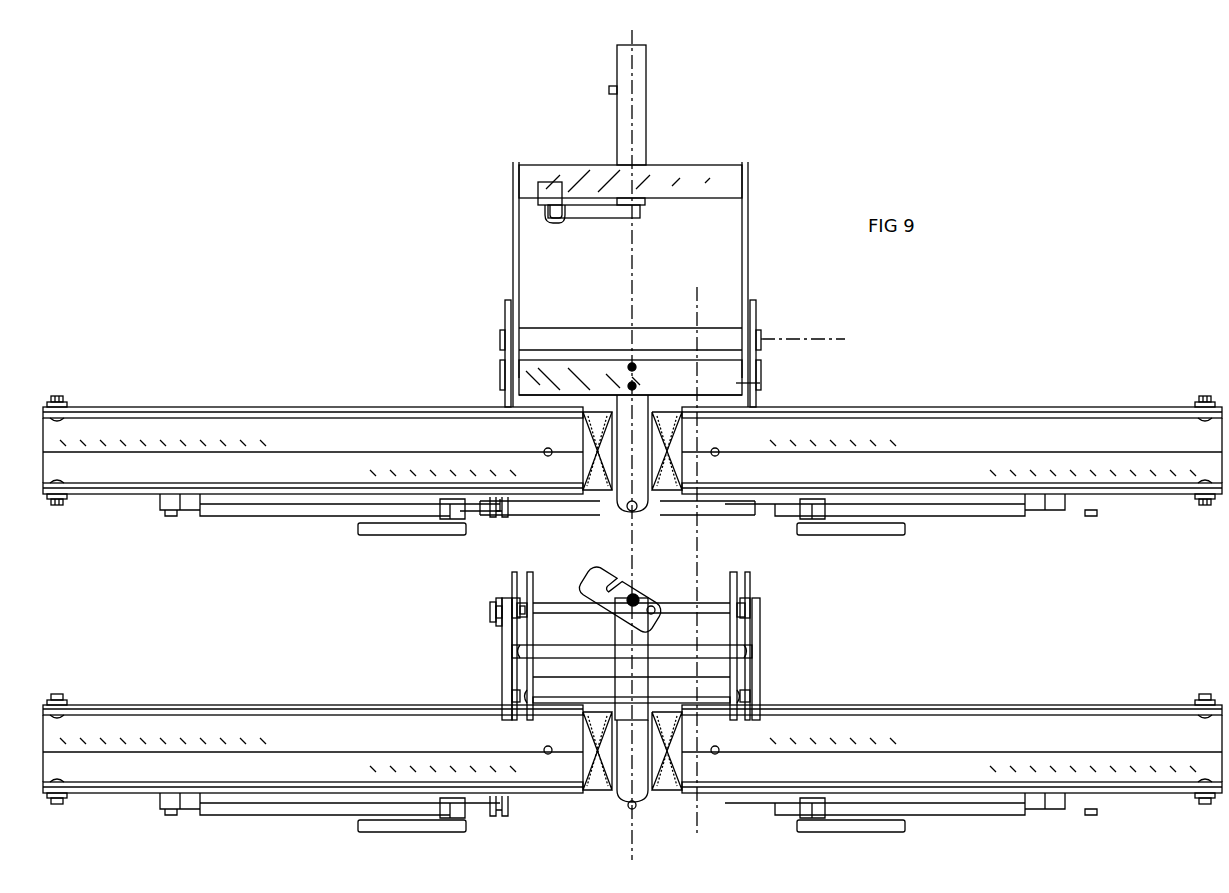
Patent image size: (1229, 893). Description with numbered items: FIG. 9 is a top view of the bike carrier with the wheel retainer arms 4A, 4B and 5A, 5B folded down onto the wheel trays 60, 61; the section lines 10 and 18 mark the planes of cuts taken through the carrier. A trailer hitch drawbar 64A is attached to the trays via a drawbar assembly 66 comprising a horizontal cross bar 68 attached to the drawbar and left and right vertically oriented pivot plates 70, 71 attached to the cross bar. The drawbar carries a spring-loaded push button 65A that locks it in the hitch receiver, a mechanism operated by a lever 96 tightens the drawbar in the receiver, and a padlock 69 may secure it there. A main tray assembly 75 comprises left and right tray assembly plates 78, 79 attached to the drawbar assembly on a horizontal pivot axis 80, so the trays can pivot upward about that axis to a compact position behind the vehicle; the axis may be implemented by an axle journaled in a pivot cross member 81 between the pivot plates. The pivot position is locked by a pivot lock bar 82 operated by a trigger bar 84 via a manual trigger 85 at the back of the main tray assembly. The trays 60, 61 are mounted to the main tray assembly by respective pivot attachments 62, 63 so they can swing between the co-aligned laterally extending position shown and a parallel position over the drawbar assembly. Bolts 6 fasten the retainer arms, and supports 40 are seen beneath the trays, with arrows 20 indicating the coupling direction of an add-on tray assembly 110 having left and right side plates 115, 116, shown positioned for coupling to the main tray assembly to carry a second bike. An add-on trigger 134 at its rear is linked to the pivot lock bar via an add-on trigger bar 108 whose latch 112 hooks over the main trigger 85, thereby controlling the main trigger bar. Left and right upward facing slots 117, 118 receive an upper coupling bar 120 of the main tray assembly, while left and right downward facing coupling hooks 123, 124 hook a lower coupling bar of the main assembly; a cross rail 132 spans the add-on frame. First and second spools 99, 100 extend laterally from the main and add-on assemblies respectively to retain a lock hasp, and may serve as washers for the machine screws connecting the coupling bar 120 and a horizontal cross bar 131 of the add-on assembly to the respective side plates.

The section line 10 is at (632, 30).
The section line 18 is at (697, 287).
The spring-loaded push button 65A is at (607, 90).
The trailer hitch drawbar 64A is at (646, 90).
The padlock 69 is at (550, 182).
The horizontal cross bar 68 is at (685, 175).
The drawbar assembly 66 is at (455, 228).
The left pivot plate 70 is at (519, 259).
The right pivot plate 71 is at (742, 259).
The lever 96 is at (592, 216).
The left tray assembly plate 78 is at (505, 315).
The right tray assembly plate 79 is at (757, 317).
The horizontal pivot axis 80 is at (840, 339).
The pivot cross member 81 is at (578, 329).
The main tray assembly 75 is at (455, 378).
The trigger bar 84 is at (640, 396).
The pivot lock bar 82 is at (753, 383).
The manual trigger 85 is at (644, 511).
The bolts 6 is at (58, 396).
The wheel retainer arm 4A is at (112, 496).
The wheel retainer arm 4B is at (110, 408).
The wheel retainer arm 5A is at (1150, 496).
The wheel retainer arm 5B is at (1150, 408).
The wheel tray 60 is at (305, 435).
The wheel tray 61 is at (959, 435).
The pivot attachment 62 is at (544, 450).
The pivot attachment 63 is at (719, 450).
The support block 40 is at (418, 535).
The direction arrow 20 is at (455, 545).
The first spool 99 is at (494, 516).
The upper coupling bar 120 is at (568, 512).
The add-on tray assembly 110 is at (488, 682).
The left side plate 115 is at (502, 634).
The right side plate 116 is at (758, 632).
The left upward facing slot 117 is at (512, 586).
The right upward facing slot 118 is at (752, 588).
The left downward facing coupling hook 123 is at (530, 574).
The right downward facing coupling hook 124 is at (735, 574).
The second spool 100 is at (490, 611).
The horizontal cross bar 131 is at (525, 612).
The add-on trigger bar 108 is at (616, 630).
The latch 112 is at (600, 585).
The cross rail 132 is at (733, 686).
The add-on trigger 134 is at (626, 812).